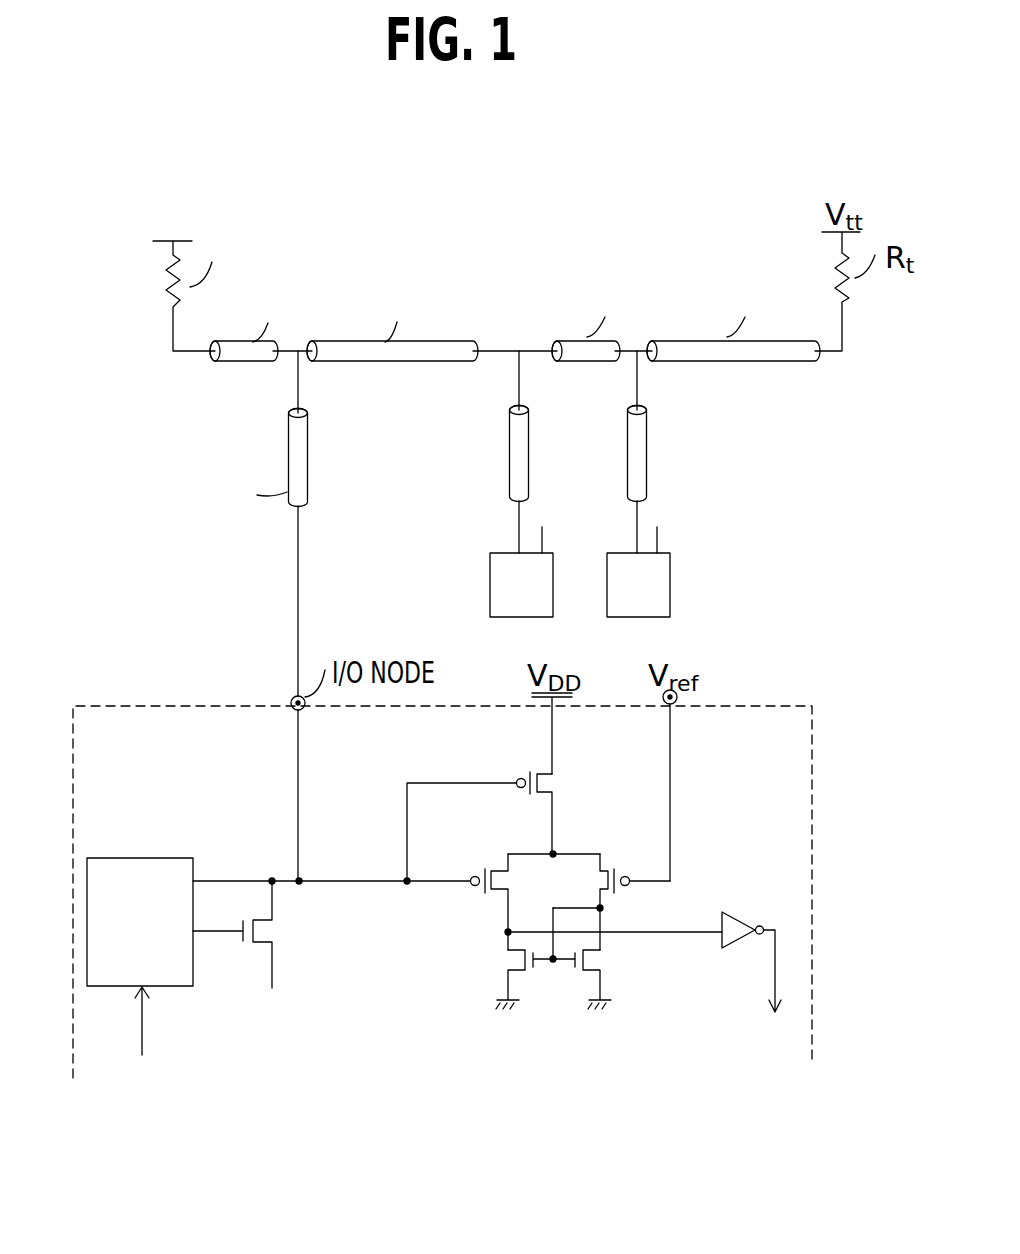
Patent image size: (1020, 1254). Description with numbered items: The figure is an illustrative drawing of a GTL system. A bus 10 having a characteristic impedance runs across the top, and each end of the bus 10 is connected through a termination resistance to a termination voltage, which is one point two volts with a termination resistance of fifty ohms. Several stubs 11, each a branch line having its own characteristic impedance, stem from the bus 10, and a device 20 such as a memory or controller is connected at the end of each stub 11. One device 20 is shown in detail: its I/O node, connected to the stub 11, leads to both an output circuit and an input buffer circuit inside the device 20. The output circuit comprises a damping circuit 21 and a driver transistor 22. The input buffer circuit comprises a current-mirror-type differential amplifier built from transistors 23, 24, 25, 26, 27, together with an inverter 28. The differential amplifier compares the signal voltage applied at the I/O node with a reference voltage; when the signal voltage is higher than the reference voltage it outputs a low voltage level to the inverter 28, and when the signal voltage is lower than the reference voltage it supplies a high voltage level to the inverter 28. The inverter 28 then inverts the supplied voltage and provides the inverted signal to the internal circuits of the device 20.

The bus 10 is at (385, 362).
The stub 11 is at (285, 438).
The device 20 is at (490, 598).
The damping circuit 21 is at (97, 856).
The driver transistor 22 is at (250, 944).
The transistor 23 is at (555, 782).
The transistor 24 is at (483, 892).
The transistor 25 is at (625, 892).
The transistor 26 is at (502, 963).
The transistor 27 is at (608, 962).
The inverter 28 is at (742, 912).